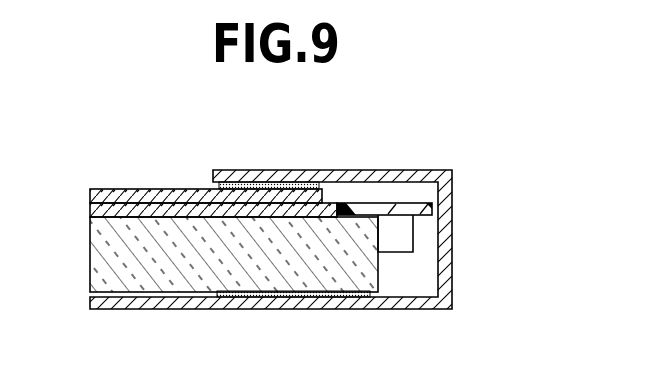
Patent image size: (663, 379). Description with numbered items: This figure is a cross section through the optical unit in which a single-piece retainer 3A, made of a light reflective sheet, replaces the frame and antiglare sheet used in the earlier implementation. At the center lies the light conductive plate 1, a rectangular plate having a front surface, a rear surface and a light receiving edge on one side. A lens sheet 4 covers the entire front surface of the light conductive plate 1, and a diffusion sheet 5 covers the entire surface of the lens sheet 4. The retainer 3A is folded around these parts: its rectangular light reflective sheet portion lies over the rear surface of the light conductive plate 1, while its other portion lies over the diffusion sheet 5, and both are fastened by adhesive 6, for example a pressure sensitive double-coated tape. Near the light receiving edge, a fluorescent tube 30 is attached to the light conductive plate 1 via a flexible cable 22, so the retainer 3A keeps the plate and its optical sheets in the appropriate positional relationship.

The light conductive plate 1 is at (103, 251).
The retainer 3A is at (166, 310).
The lens sheet 4 is at (137, 208).
The diffusion sheet 5 is at (187, 192).
The adhesive 6 is at (258, 186).
The flexible cable 22 is at (375, 210).
The fluorescent tube 30 is at (405, 240).